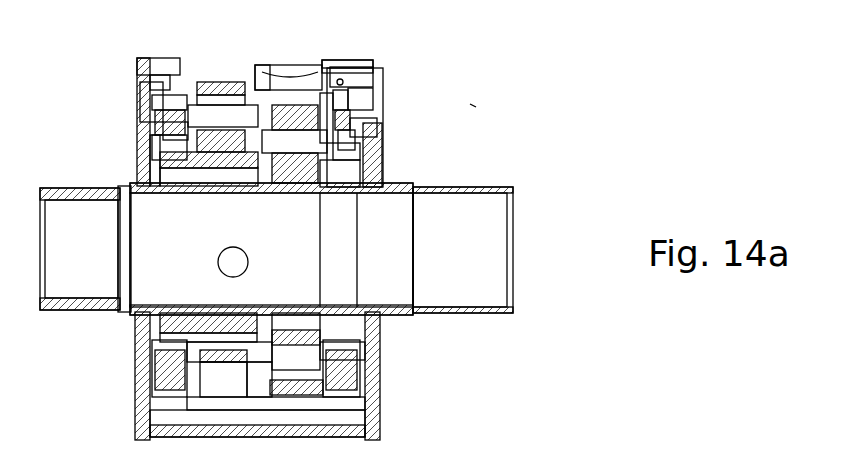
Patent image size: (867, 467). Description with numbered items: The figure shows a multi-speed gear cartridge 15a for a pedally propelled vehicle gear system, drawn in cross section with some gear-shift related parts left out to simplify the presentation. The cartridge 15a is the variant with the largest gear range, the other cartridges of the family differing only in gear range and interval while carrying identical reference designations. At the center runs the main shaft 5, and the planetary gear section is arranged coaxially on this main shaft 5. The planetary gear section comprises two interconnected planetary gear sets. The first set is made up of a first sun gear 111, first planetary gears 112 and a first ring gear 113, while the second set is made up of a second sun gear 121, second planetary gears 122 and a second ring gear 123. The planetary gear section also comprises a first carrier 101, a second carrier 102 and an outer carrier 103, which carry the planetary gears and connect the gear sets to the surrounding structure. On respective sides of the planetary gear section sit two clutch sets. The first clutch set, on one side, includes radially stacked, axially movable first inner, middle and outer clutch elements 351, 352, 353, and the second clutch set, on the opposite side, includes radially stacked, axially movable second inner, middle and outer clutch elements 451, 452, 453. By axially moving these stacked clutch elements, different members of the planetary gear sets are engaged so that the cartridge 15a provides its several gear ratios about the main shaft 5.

The main shaft 5 is at (430, 184).
The multi-speed gear cartridge 15a is at (473, 105).
The first carrier 101 is at (330, 82).
The second carrier 102 is at (322, 94).
The outer carrier 103 is at (324, 68).
The first sun gear 111 is at (218, 145).
The first planetary gears 112 is at (226, 97).
The first ring gear 113 is at (236, 80).
The second sun gear 121 is at (292, 172).
The second planetary gears 122 is at (298, 120).
The second ring gear 123 is at (300, 85).
The first inner clutch element 351 is at (137, 130).
The first middle clutch element 352 is at (137, 115).
The first outer clutch element 353 is at (137, 100).
The second inner clutch element 451 is at (378, 118).
The second middle clutch element 452 is at (377, 101).
The second outer clutch element 453 is at (376, 84).